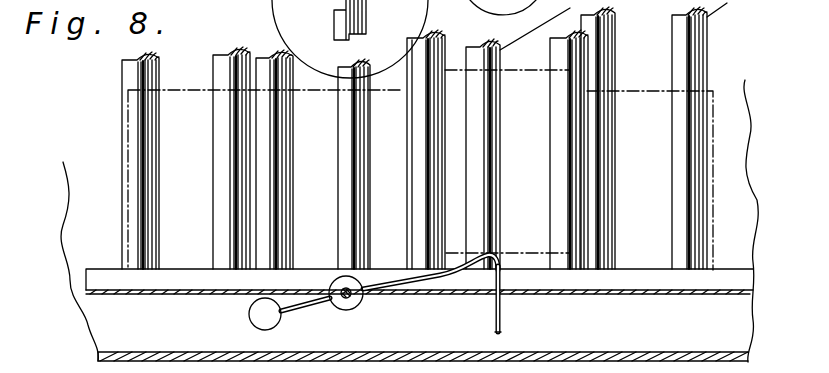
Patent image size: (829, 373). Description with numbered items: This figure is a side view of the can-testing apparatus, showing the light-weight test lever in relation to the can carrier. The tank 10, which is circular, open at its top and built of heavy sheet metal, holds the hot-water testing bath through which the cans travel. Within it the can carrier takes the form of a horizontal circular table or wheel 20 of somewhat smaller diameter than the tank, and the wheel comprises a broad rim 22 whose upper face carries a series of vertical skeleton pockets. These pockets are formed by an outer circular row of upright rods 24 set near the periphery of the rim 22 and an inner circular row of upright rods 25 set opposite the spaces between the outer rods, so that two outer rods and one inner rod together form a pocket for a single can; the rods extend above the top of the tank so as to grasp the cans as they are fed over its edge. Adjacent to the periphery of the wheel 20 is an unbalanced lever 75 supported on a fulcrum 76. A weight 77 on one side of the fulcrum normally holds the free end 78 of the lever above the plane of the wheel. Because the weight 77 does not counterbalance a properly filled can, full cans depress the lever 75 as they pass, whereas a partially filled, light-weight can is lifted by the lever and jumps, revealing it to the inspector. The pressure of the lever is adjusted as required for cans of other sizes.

The tank 10 is at (608, 357).
The wheel 20 is at (715, 288).
The rim 22 is at (152, 283).
The upright rods 24 is at (160, 72).
The upright rods 25 is at (243, 105).
The unbalanced lever 75 is at (430, 287).
The fulcrum 76 is at (347, 309).
The weight 77 is at (249, 319).
The free end 78 is at (503, 318).